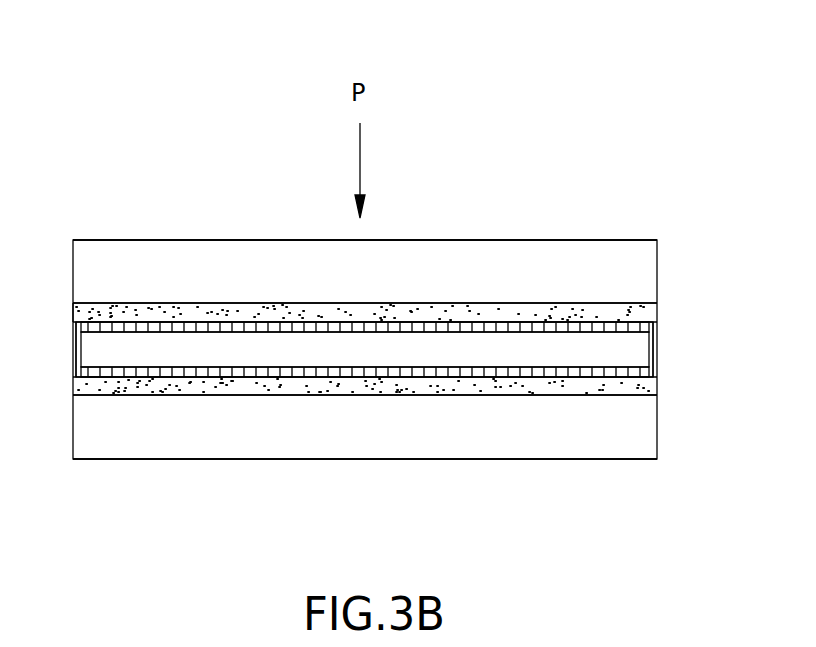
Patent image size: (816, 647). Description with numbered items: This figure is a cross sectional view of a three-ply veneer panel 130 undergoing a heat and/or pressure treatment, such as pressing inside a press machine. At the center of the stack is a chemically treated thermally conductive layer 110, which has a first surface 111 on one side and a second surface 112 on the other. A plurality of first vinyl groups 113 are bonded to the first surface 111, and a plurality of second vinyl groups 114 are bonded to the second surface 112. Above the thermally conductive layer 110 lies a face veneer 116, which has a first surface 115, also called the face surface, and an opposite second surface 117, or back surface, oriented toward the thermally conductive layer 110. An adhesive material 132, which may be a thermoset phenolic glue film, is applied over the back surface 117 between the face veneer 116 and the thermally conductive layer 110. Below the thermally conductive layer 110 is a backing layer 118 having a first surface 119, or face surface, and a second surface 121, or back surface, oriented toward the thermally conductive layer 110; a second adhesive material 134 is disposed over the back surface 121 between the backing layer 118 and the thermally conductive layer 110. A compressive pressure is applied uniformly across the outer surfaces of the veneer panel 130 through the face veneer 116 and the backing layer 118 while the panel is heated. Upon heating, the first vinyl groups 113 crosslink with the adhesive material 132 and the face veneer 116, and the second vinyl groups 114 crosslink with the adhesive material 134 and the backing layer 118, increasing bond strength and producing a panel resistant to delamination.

The veneer panel 130 is at (592, 126).
The thermally conductive layer 110 is at (381, 358).
The first surface 111 is at (617, 328).
The second surface 112 is at (122, 368).
The first vinyl groups 113 is at (541, 328).
The second vinyl groups 114 is at (418, 373).
The first surface 115 is at (213, 240).
The face veneer 116 is at (378, 282).
The second surface 117 is at (92, 303).
The backing layer 118 is at (378, 437).
The first surface 119 is at (230, 460).
The second surface 121 is at (633, 392).
The adhesive material 132 is at (148, 318).
The adhesive material 134 is at (578, 380).